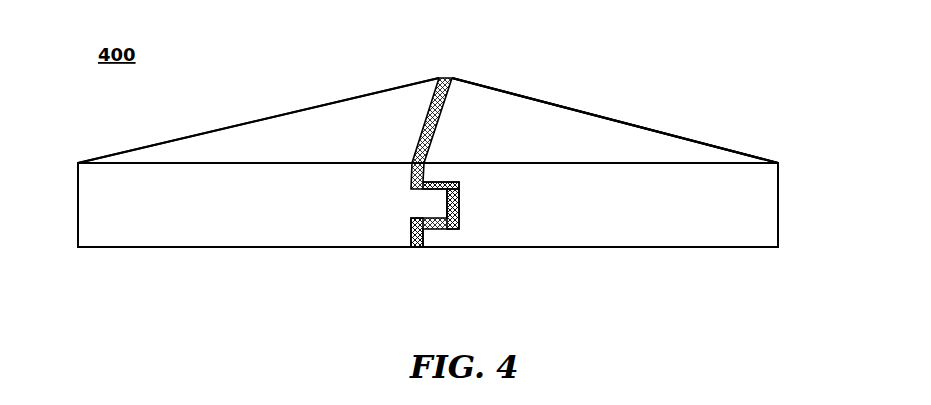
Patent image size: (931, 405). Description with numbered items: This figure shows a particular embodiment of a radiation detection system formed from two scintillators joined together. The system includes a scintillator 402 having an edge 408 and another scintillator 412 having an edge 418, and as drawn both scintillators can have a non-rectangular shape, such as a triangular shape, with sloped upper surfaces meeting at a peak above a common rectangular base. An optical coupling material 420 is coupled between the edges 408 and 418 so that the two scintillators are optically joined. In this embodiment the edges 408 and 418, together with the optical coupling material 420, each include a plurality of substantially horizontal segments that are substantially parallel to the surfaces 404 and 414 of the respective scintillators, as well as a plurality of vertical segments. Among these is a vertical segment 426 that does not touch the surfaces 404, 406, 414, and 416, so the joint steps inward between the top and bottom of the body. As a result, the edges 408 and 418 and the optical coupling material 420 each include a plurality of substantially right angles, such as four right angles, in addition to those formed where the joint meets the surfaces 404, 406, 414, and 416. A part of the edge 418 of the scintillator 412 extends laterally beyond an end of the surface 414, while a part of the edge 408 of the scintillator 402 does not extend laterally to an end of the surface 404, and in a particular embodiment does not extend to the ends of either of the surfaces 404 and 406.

The scintillator 402 is at (323, 96).
The surface 404 is at (300, 130).
The surface 406 is at (245, 249).
The edge 408 is at (446, 205).
The scintillator 412 is at (647, 107).
The surface 414 is at (523, 127).
The surface 416 is at (635, 249).
The edge 418 is at (461, 186).
The optical coupling material 420 is at (415, 249).
The vertical segment 426 is at (461, 218).